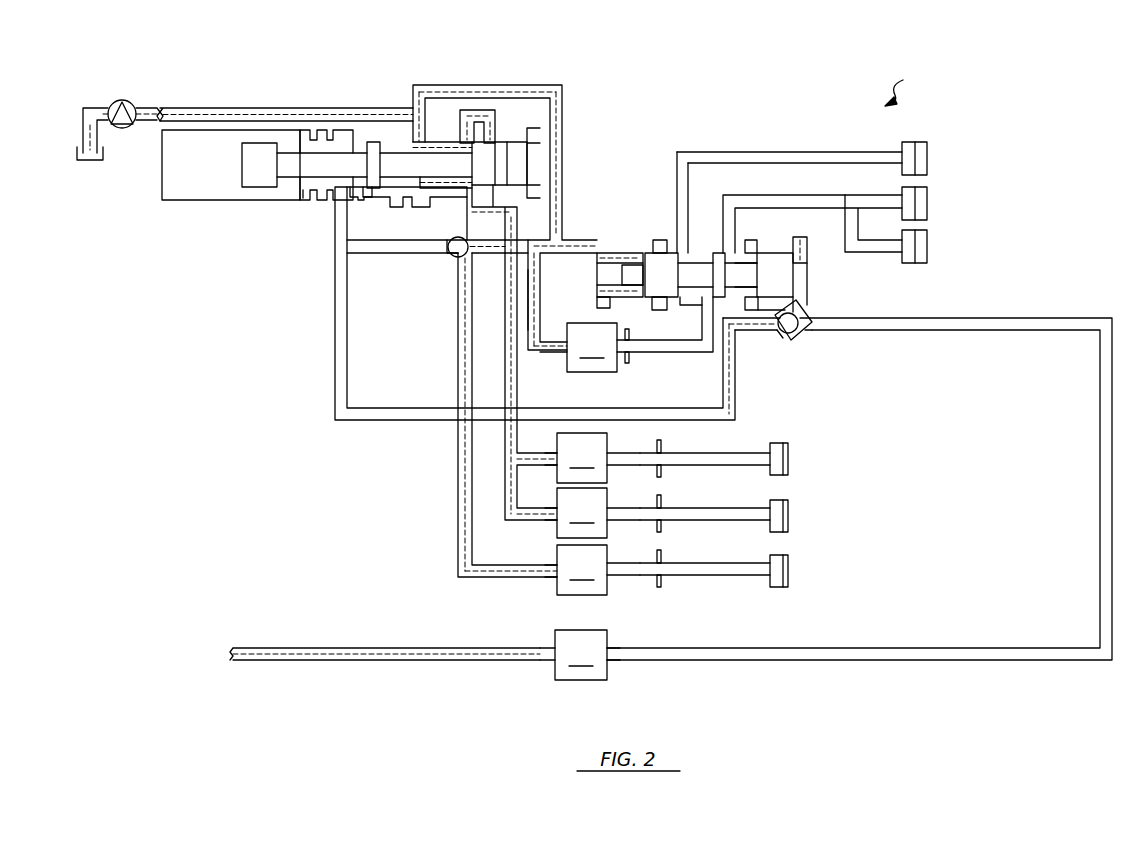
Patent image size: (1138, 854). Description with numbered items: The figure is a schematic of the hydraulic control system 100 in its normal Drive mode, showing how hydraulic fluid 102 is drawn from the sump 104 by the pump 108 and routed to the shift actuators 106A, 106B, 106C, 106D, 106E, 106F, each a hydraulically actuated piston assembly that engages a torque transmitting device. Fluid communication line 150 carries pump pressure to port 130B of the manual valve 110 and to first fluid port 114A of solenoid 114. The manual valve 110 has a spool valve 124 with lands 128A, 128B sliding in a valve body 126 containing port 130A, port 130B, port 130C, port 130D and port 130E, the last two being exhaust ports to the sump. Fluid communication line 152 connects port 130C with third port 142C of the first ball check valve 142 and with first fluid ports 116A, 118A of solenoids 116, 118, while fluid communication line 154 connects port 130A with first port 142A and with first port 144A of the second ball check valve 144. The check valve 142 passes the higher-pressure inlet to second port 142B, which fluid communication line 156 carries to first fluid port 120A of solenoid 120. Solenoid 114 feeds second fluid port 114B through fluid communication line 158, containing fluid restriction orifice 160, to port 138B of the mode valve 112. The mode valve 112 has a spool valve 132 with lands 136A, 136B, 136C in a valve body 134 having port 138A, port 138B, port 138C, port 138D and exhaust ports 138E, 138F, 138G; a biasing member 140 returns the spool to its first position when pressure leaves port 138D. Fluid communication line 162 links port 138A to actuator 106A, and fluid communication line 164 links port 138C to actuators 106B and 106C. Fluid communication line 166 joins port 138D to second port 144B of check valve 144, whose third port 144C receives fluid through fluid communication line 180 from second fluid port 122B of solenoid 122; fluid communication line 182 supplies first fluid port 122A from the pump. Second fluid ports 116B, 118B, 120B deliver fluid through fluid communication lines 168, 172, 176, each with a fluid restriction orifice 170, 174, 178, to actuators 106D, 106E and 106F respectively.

The hydraulic control system 100 is at (911, 82).
The hydraulic fluid 102 is at (92, 162).
The sump 104 is at (97, 138).
The shift actuator 106A is at (930, 157).
The shift actuator 106B is at (930, 203).
The shift actuator 106C is at (930, 246).
The shift actuator 106D is at (790, 457).
The shift actuator 106E is at (790, 514).
The shift actuator 106F is at (790, 571).
The pump 108 is at (122, 100).
The manual valve 110 is at (533, 119).
The mode valve 112 is at (733, 254).
The solenoid 114 is at (592, 347).
The first fluid port 114A is at (533, 352).
The second fluid port 114B is at (618, 354).
The solenoid 116 is at (582, 458).
The first fluid port 116A is at (553, 452).
The second fluid port 116B is at (609, 457).
The solenoid 118 is at (582, 513).
The first fluid port 118A is at (545, 515).
The second fluid port 118B is at (609, 512).
The solenoid 120 is at (582, 570).
The first fluid port 120A is at (553, 574).
The second fluid port 120B is at (609, 569).
The solenoid 122 is at (581, 655).
The first fluid port 122A is at (552, 660).
The second fluid port 122B is at (608, 652).
The valve 124 is at (297, 160).
The valve body 126 is at (345, 253).
The land 128A is at (373, 150).
The land 128B is at (485, 150).
The port 130A is at (335, 203).
The port 130B is at (418, 138).
The port 130C is at (448, 205).
The port 130D is at (547, 170).
The port 130E is at (303, 192).
The valve 132 is at (747, 273).
The valve body 134 is at (807, 240).
The land 136A is at (652, 272).
The land 136B is at (727, 247).
The land 136C is at (780, 273).
The port 138A is at (682, 245).
The port 138B is at (705, 302).
The port 138C is at (727, 250).
The port 138D is at (798, 300).
The port 138E is at (618, 290).
The port 138F is at (655, 310).
The port 138G is at (753, 310).
The biasing member 140 is at (595, 271).
The first ball check valve 142 is at (396, 275).
The first port 142A is at (450, 250).
The second port 142B is at (458, 277).
The third port 142C is at (512, 243).
The second ball check valve 144 is at (857, 350).
The first port 144A is at (778, 334).
The second port 144B is at (807, 335).
The third port 144C is at (812, 325).
The fluid communication line 150 is at (205, 108).
The fluid communication line 152 is at (505, 347).
The fluid communication line 154 is at (337, 357).
The fluid communication line 156 is at (458, 472).
The fluid communication line 158 is at (647, 348).
The fluid restriction orifice 160 is at (622, 328).
The fluid communication line 162 is at (753, 162).
The fluid communication line 164 is at (817, 202).
The fluid communication line 166 is at (800, 342).
The fluid communication line 168 is at (714, 455).
The fluid restriction orifice 170 is at (664, 447).
The fluid communication line 172 is at (714, 510).
The fluid restriction orifice 174 is at (664, 502).
The fluid communication line 176 is at (714, 565).
The fluid restriction orifice 178 is at (664, 559).
The fluid communication line 180 is at (1082, 318).
The fluid communication line 182 is at (337, 648).